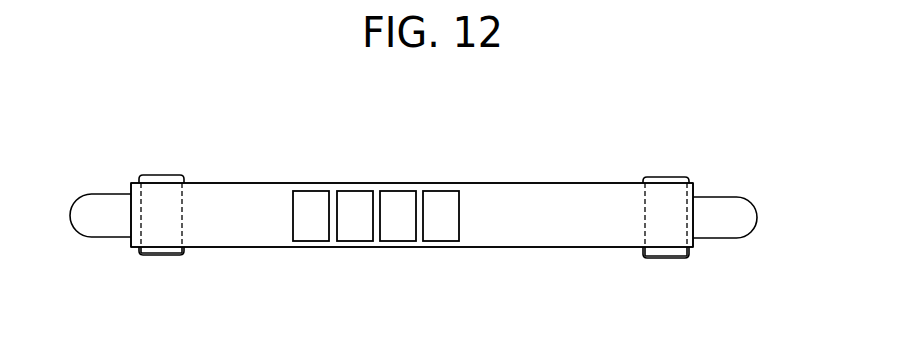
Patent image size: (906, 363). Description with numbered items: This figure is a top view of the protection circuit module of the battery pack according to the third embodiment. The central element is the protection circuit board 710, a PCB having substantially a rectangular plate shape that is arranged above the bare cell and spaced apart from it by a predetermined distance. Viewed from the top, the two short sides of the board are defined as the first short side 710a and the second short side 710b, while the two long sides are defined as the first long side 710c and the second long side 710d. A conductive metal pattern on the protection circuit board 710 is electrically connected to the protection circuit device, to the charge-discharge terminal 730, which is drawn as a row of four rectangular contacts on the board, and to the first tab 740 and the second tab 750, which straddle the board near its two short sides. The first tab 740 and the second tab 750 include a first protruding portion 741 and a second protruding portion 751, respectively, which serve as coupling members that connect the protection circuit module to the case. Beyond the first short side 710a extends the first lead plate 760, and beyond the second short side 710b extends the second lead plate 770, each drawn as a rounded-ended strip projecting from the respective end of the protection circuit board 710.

The protection circuit board 710 is at (567, 190).
The first short side 710a is at (697, 187).
The second short side 710b is at (128, 183).
The first long side 710c is at (472, 248).
The second long side 710d is at (473, 183).
The charge-discharge terminal 730 is at (312, 200).
The first tab 740 is at (651, 237).
The first protruding portion 741 is at (679, 256).
The second tab 750 is at (147, 235).
The second protruding portion 751 is at (177, 253).
The first lead plate 760 is at (743, 197).
The second lead plate 770 is at (90, 200).